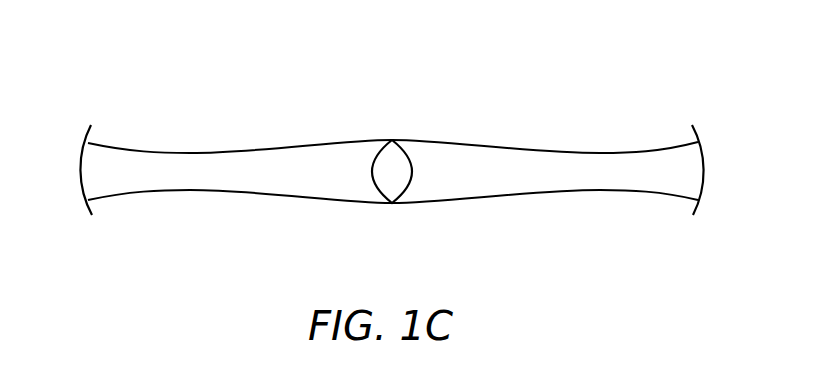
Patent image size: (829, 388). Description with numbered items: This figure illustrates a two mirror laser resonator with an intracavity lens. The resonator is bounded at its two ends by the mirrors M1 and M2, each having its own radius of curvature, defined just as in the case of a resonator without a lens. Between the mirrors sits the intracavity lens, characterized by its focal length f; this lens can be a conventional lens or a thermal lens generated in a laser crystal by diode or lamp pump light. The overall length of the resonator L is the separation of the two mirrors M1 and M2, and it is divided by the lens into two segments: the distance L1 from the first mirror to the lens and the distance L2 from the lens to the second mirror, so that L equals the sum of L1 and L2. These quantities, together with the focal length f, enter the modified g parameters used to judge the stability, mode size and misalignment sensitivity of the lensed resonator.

The first resonator mirror M1 is at (99, 200).
The second resonator mirror M2 is at (682, 199).
The focal length of the intracavity lens f is at (392, 189).
The length of the resonator L is at (690, 53).
The distance from first mirror to intracavity lens L1 is at (368, 92).
The distance from intracavity lens to second mirror L2 is at (690, 92).